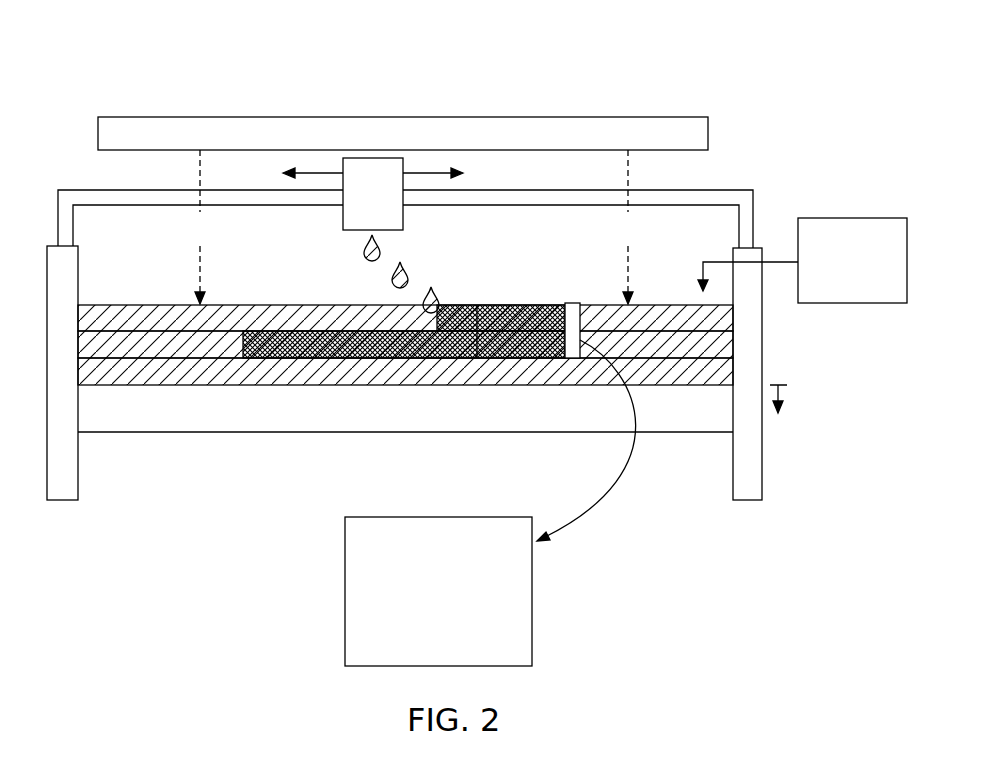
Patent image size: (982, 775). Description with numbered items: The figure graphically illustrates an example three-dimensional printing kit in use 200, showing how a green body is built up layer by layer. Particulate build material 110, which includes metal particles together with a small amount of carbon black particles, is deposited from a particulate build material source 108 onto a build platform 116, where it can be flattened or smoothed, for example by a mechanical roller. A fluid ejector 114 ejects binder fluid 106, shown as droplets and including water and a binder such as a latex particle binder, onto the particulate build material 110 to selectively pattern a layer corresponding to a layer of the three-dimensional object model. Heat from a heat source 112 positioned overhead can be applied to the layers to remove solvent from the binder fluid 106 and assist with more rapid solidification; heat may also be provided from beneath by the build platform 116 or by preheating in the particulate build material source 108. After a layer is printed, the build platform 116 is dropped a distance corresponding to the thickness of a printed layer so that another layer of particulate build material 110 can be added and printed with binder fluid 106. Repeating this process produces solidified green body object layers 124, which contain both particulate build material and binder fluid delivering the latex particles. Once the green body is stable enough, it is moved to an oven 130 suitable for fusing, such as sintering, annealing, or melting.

The three-dimensional printing kit in use 200 is at (166, 48).
The heat source 112 is at (383, 146).
The fluid ejector 114 is at (352, 205).
The binder fluid 106 is at (364, 247).
The particulate build material source 108 is at (833, 275).
The particulate build material 110 is at (147, 339).
The solidified green body object layers 124 is at (363, 358).
The build platform 116 is at (570, 388).
The oven 130 is at (418, 601).